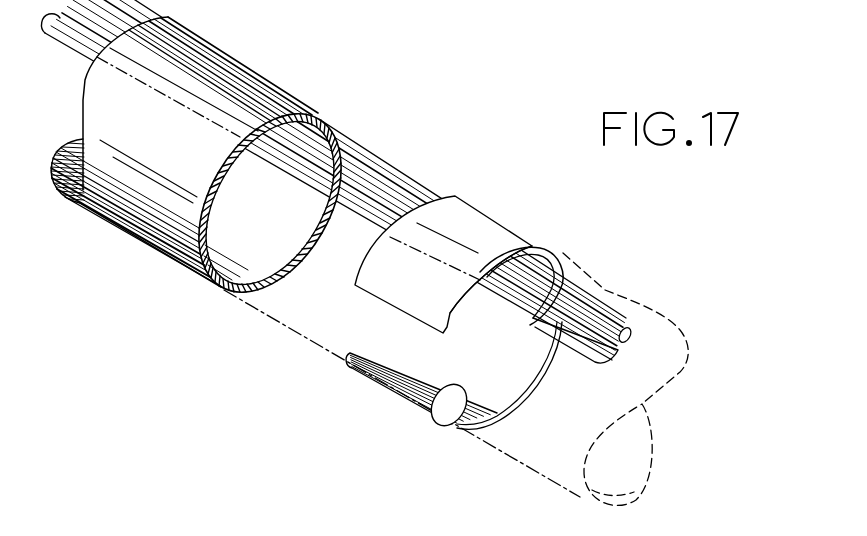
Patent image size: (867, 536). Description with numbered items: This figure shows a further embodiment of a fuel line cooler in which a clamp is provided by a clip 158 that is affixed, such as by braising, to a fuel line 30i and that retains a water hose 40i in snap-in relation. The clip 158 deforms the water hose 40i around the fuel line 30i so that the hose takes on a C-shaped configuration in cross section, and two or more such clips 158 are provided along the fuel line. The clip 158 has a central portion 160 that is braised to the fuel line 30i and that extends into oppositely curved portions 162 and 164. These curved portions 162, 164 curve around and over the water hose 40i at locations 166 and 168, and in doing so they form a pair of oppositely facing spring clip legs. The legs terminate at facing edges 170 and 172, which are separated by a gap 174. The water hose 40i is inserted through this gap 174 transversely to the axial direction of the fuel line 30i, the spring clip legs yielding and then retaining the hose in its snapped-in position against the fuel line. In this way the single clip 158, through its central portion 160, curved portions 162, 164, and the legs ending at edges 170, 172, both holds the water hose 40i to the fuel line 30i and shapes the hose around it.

The fuel line 30i is at (600, 318).
The water hose 40i is at (220, 66).
The clip 158 is at (505, 298).
The central portion 160 is at (532, 324).
The curved portion 162 is at (560, 250).
The curved portion 164 is at (590, 358).
The hose-overlying location 166 is at (470, 256).
The hose-overlying location 168 is at (530, 390).
The facing edge 170 is at (408, 312).
The facing edge 172 is at (460, 430).
The gap 174 is at (410, 395).